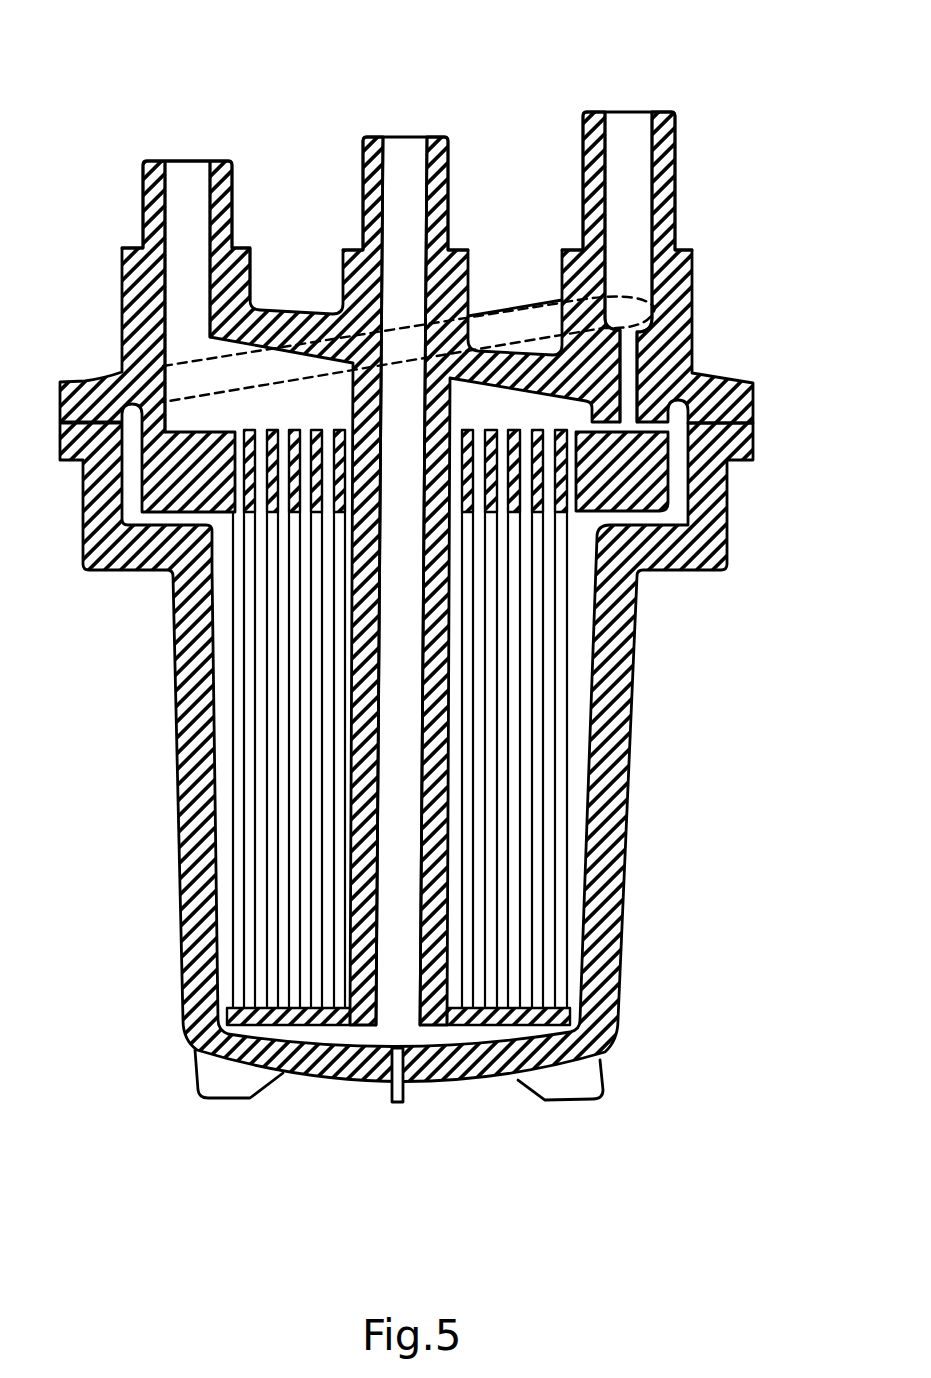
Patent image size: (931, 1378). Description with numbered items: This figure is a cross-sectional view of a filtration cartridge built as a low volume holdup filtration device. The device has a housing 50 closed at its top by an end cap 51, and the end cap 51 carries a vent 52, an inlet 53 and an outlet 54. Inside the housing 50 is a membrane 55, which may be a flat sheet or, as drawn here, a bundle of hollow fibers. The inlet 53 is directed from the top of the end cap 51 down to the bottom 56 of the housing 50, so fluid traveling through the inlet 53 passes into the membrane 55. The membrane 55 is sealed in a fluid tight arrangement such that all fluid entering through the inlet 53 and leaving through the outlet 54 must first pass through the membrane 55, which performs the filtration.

The housing 50 is at (635, 807).
The end cap 51 is at (707, 377).
The vent 52 is at (593, 112).
The inlet 53 is at (375, 135).
The outlet 54 is at (150, 160).
The membrane 55 is at (283, 567).
The bottom 56 is at (328, 1036).